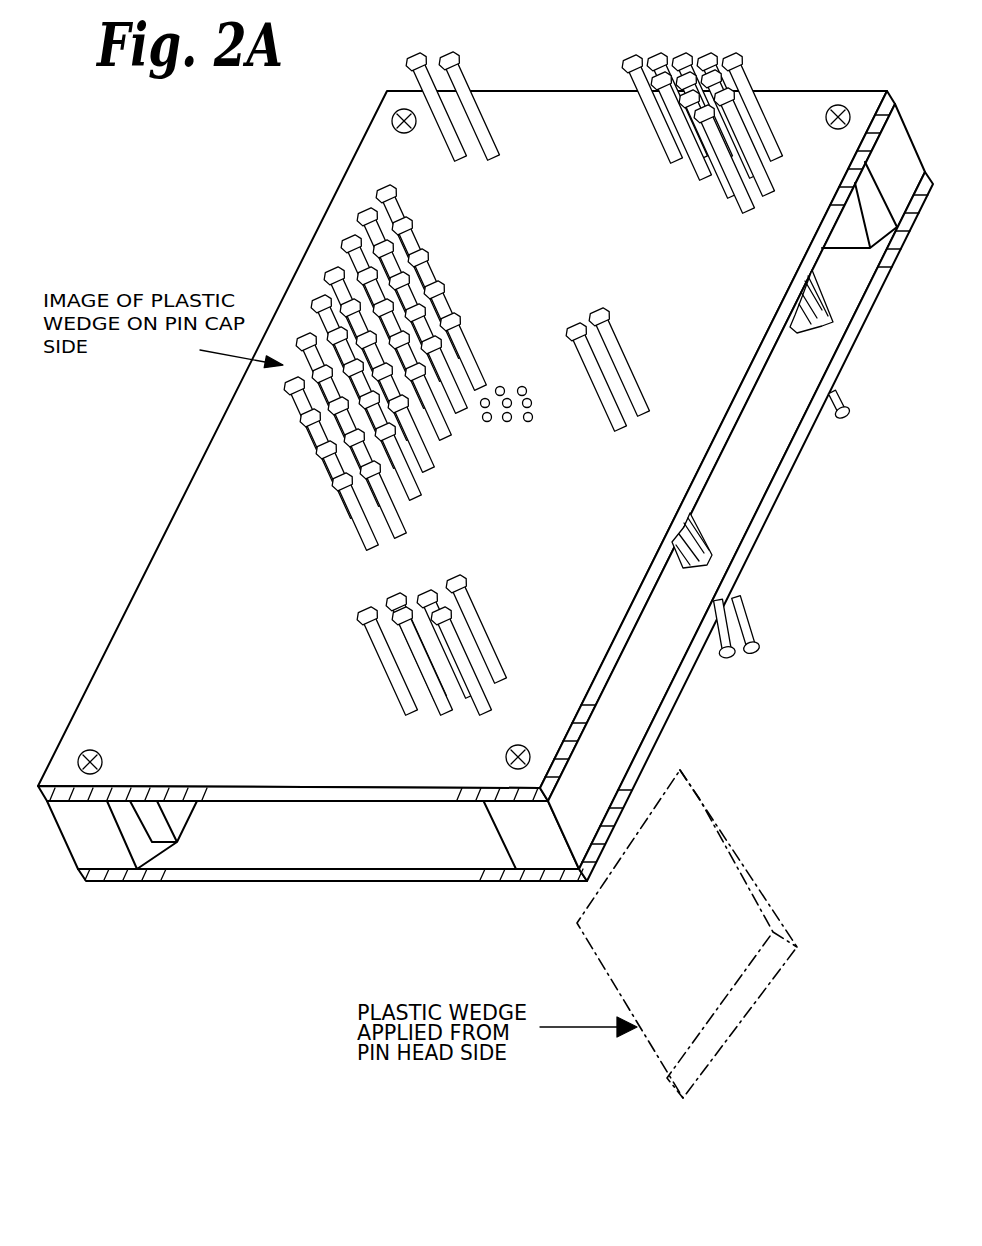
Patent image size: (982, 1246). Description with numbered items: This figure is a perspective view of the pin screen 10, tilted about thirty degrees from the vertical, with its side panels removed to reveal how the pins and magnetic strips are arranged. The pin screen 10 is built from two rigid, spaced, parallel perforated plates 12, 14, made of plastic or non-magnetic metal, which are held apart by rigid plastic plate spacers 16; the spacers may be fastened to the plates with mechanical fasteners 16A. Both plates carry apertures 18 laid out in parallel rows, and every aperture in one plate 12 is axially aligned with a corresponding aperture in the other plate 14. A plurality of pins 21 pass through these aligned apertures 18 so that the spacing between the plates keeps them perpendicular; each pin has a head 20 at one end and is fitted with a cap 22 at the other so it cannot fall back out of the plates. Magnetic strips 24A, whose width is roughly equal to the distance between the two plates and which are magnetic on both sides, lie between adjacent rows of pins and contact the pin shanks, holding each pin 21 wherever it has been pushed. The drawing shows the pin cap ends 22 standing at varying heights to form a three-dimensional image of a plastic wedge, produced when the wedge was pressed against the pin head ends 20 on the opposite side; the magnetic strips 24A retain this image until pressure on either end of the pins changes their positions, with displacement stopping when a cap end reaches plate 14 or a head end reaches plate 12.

The pin screen 10 is at (485, 532).
The perforated plate 12 is at (720, 597).
The perforated plate 14 is at (693, 483).
The plate spacer 16 is at (92, 853).
The mechanical fastener 16A is at (503, 755).
The aperture 18 is at (518, 430).
The head 20 is at (753, 648).
The pin 21 is at (343, 500).
The cap 22 is at (455, 62).
The magnetic strip 24A is at (818, 284).